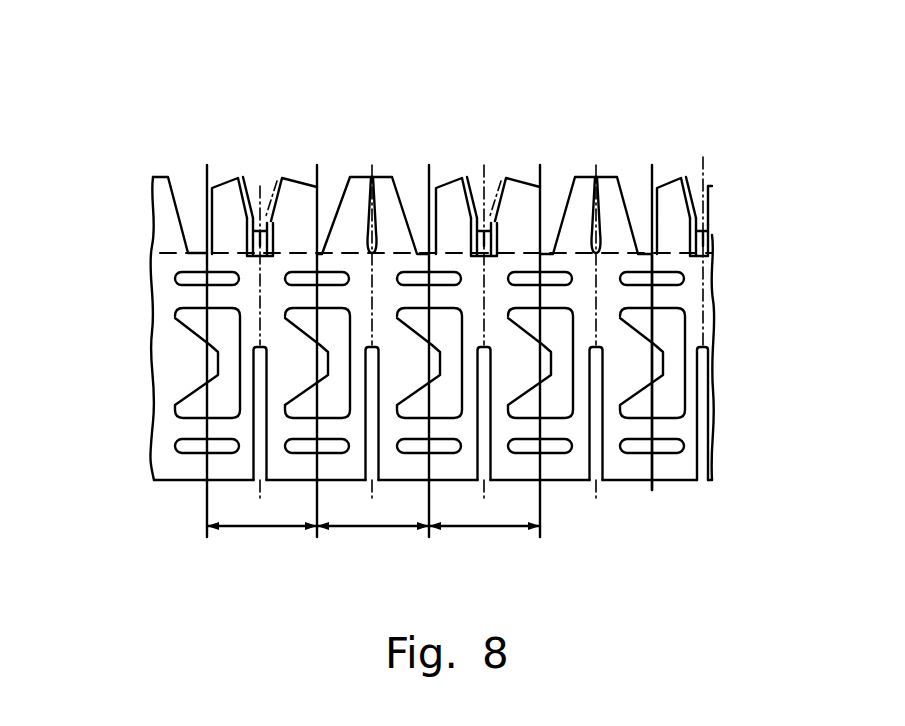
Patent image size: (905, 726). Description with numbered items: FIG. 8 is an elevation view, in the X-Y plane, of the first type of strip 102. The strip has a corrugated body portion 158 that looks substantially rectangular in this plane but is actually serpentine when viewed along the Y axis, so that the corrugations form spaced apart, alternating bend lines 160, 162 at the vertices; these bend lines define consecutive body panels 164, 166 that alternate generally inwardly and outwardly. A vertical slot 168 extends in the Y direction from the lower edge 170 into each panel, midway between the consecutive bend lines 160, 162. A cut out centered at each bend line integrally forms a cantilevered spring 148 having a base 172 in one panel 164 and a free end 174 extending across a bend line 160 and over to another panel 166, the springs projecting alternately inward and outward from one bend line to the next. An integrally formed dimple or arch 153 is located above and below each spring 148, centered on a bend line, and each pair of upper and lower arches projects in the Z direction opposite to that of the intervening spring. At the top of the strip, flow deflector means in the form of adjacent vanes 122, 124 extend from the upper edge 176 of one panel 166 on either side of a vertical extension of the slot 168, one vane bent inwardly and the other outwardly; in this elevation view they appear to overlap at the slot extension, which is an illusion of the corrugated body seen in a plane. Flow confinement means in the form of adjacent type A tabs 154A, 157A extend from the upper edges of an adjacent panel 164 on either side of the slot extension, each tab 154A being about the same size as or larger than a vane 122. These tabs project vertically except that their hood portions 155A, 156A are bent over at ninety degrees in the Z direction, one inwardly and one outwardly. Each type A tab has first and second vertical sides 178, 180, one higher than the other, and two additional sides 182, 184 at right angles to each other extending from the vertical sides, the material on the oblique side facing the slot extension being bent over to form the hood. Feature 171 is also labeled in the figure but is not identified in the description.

The Type 1 strip 102 is at (720, 281).
The vane 122 is at (340, 180).
The vane 124 is at (407, 180).
The cantilevered spring 148 is at (333, 361).
The dimple or arch 153 is at (303, 293).
The tab 154A is at (222, 212).
The hood portion 155A is at (243, 180).
The hood portion 156A is at (277, 180).
The tab 157A is at (293, 226).
The corrugated body portion 158 is at (702, 307).
The bend line 160 is at (318, 468).
The bend line 162 is at (427, 467).
The body panel 164 is at (285, 528).
The body panel 166 is at (395, 528).
The vertical slot 168 is at (298, 430).
The lower edge 170 is at (627, 480).
The window 171 is at (310, 332).
The base 172 is at (290, 412).
The free end 174 is at (333, 356).
The upper edge 176 is at (540, 250).
The first vertical side 178 is at (642, 210).
The additional side 182 is at (665, 185).
The additional side 184 is at (693, 192).
The second vertical side 180 is at (699, 230).